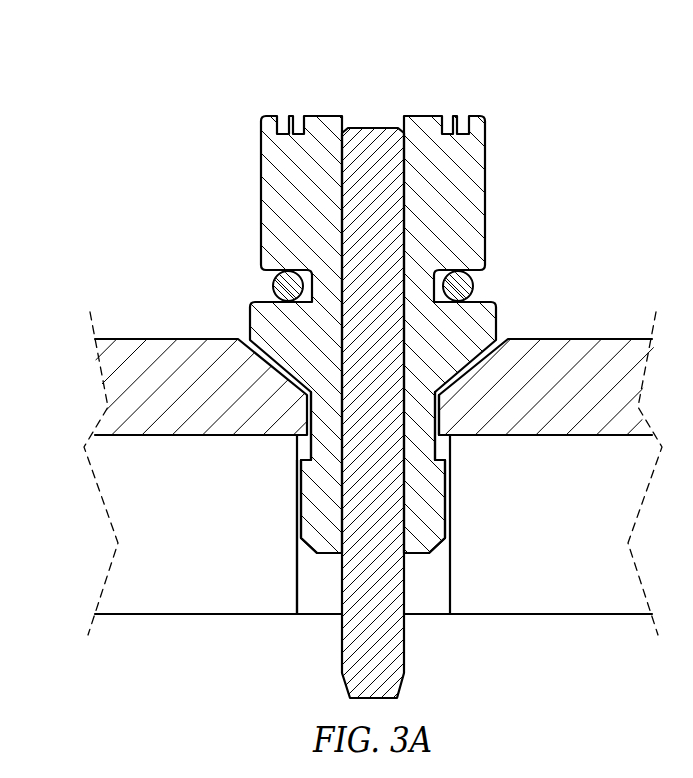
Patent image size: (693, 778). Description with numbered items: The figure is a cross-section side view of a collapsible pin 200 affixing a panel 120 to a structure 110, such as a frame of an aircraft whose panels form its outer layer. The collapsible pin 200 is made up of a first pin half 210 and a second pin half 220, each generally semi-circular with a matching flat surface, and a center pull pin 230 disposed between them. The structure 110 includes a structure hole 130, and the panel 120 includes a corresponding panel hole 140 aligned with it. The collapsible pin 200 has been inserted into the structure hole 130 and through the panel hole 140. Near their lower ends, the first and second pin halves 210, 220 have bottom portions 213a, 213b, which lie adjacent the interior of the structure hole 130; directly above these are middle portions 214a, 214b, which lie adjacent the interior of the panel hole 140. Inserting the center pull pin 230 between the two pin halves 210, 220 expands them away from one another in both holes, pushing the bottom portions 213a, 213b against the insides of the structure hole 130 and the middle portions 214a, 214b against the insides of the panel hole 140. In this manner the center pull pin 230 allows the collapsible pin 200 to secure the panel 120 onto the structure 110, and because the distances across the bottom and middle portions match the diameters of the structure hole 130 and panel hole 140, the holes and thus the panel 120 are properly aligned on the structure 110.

The structure 110 is at (541, 558).
The panel 120 is at (210, 358).
The structure hole 130 is at (317, 575).
The panel hole 140 is at (437, 418).
The collapsible pin 200 is at (346, 382).
The first pin half 210 is at (346, 350).
The second pin half 220 is at (346, 350).
The center pull pin 230 is at (382, 645).
The bottom portion 213a is at (318, 515).
The bottom portion 213b is at (432, 516).
The middle portion 214a is at (320, 450).
The middle portion 214b is at (425, 450).